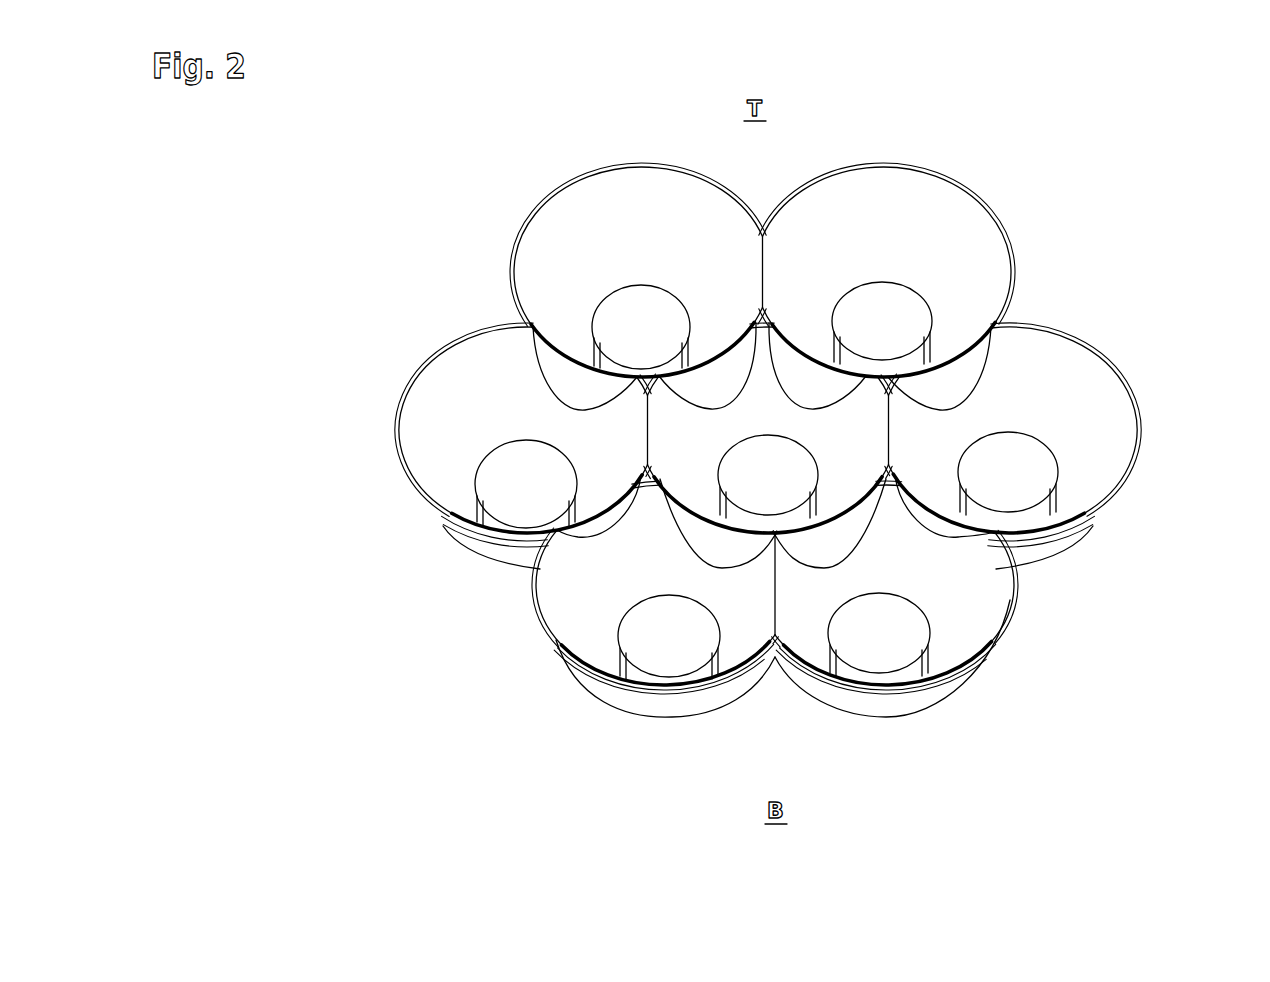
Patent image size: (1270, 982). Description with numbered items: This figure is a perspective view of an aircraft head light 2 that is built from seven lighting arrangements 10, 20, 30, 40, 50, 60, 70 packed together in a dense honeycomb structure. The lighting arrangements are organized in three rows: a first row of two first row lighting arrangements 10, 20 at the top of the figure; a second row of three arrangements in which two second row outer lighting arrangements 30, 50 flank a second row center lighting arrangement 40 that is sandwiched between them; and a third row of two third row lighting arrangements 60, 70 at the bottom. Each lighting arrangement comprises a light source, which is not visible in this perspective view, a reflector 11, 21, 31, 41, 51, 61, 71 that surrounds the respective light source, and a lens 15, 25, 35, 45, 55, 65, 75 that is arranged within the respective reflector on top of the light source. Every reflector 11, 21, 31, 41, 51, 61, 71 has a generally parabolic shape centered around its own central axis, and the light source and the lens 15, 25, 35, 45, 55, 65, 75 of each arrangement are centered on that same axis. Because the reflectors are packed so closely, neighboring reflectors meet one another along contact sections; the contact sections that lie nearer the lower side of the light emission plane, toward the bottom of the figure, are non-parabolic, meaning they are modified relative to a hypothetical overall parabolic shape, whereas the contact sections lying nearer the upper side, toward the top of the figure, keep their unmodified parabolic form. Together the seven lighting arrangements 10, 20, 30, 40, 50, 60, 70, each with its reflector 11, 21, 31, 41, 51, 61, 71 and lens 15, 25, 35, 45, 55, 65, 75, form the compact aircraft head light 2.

The aircraft head light 2 is at (1140, 150).
The first row lighting arrangement 10 is at (626, 242).
The reflector 11 is at (610, 220).
The lens 15 is at (660, 308).
The first row lighting arrangement 20 is at (917, 234).
The reflector 21 is at (957, 232).
The lens 25 is at (905, 313).
The second row outer lighting arrangement 30 is at (471, 412).
The reflector 31 is at (485, 365).
The lens 35 is at (503, 470).
The second row center lighting arrangement 40 is at (810, 373).
The reflector 41 is at (843, 463).
The lens 45 is at (757, 463).
The second row outer lighting arrangement 50 is at (1066, 428).
The reflector 51 is at (1083, 375).
The lens 55 is at (1032, 463).
The third row lighting arrangement 60 is at (609, 629).
The reflector 61 is at (580, 627).
The lens 65 is at (660, 640).
The third row lighting arrangement 70 is at (905, 636).
The reflector 71 is at (957, 620).
The lens 75 is at (883, 640).